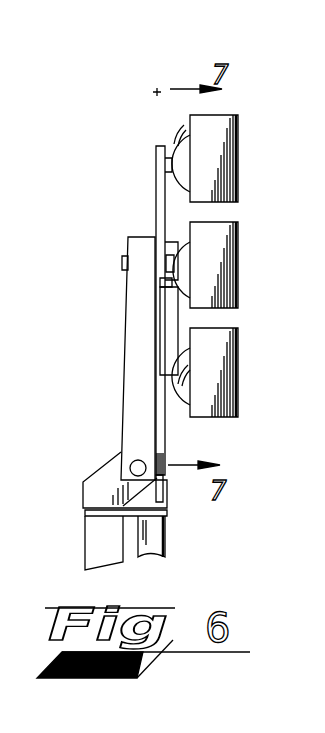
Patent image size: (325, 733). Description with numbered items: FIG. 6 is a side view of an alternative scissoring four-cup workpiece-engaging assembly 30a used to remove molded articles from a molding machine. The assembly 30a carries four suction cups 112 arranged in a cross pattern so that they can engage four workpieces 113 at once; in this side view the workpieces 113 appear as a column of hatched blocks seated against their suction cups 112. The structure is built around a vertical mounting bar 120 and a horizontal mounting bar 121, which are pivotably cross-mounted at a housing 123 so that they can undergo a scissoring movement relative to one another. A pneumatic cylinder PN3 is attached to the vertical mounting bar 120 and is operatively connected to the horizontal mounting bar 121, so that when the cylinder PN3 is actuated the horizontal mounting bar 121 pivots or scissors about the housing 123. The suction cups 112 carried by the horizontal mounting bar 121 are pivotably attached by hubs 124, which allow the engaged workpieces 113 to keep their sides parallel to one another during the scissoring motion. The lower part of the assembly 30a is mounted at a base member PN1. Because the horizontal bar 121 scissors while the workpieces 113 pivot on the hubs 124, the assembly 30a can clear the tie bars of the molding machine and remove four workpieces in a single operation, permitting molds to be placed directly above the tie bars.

The workpiece-engaging assembly 30a is at (140, 222).
The suction cups 112 is at (175, 140).
The workpieces 113 is at (222, 150).
The vertical mounting bar 120 is at (158, 146).
The horizontal mounting bar 121 is at (163, 262).
The housing 123 is at (160, 280).
The hubs 124 is at (155, 272).
The panel PN1 is at (165, 540).
The pneumatic cylinder PN3 is at (180, 322).